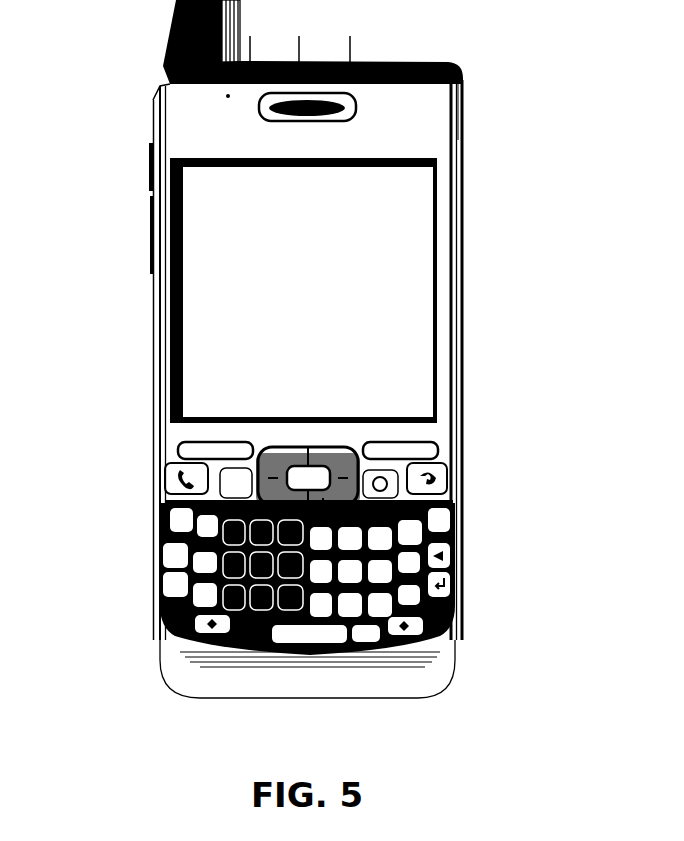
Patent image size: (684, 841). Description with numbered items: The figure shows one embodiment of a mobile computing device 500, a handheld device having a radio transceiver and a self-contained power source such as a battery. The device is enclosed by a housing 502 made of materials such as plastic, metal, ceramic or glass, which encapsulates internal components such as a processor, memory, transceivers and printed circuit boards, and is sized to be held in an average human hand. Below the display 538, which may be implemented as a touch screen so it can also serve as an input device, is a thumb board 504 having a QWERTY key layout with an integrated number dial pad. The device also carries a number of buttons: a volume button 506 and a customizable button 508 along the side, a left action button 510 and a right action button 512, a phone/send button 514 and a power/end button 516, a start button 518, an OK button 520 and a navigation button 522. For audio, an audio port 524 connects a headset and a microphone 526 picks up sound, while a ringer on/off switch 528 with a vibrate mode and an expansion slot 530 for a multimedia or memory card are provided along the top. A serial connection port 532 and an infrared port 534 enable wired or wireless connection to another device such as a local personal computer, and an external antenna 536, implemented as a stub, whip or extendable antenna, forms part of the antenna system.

The mobile computing device 500 is at (668, 50).
The housing 502 is at (458, 114).
The thumb board 504 is at (284, 612).
The volume button 506 is at (152, 194).
The customizable button 508 is at (152, 258).
The left action button 510 is at (167, 449).
The right action button 512 is at (437, 449).
The phone/send button 514 is at (177, 474).
The power/end button 516 is at (430, 474).
The start button 518 is at (168, 500).
The OK button 520 is at (440, 501).
The navigation button 522 is at (455, 531).
The audio port 524 is at (202, 647).
The microphone 526 is at (412, 650).
The ringer on/off switch 528 is at (350, 40).
The expansion slot 530 is at (298, 40).
The serial connection port 532 is at (307, 657).
The infrared port 534 is at (252, 40).
The external antenna 536 is at (170, 22).
The display 538 is at (435, 262).